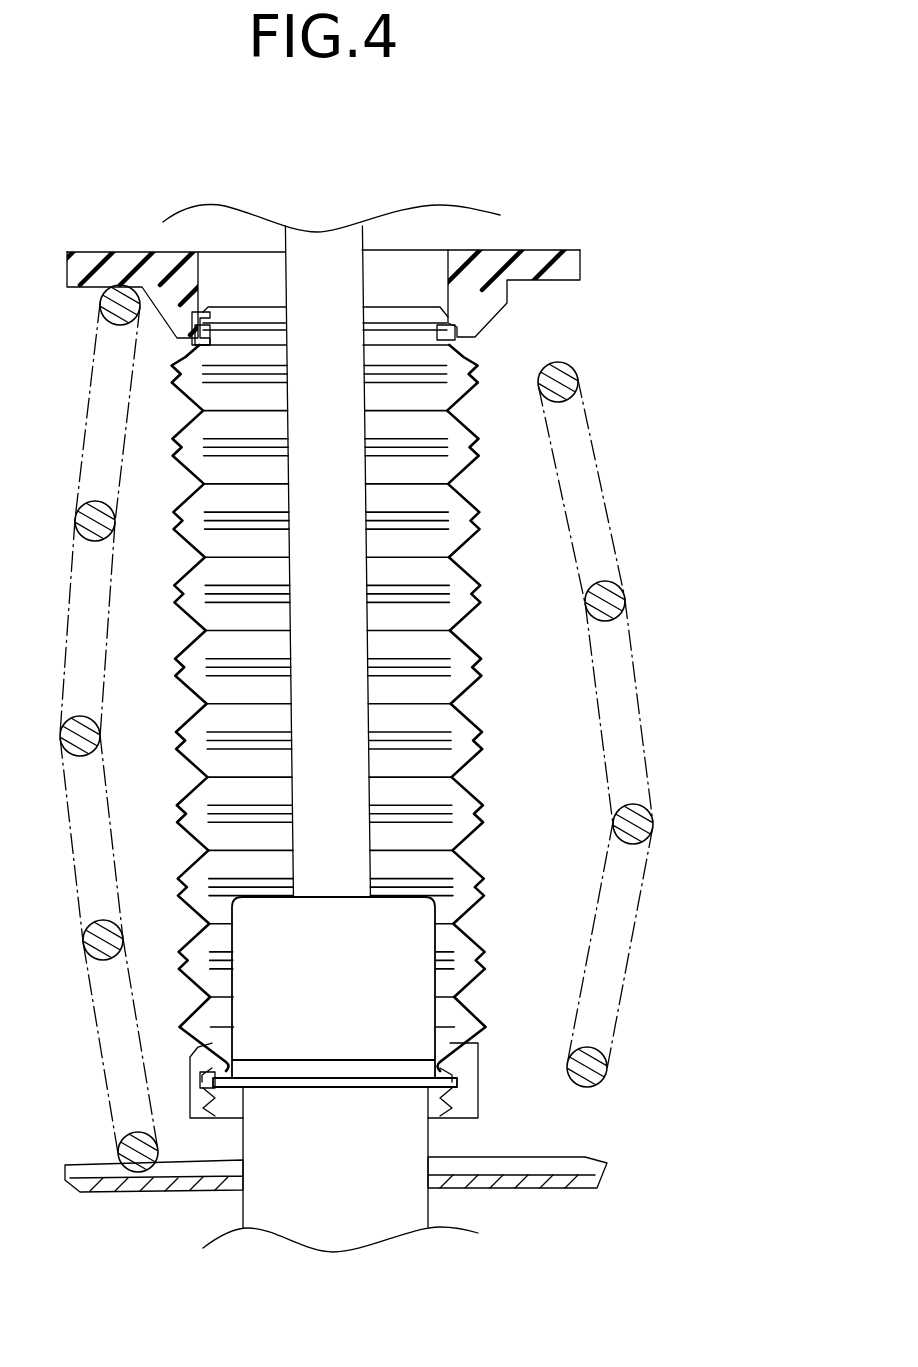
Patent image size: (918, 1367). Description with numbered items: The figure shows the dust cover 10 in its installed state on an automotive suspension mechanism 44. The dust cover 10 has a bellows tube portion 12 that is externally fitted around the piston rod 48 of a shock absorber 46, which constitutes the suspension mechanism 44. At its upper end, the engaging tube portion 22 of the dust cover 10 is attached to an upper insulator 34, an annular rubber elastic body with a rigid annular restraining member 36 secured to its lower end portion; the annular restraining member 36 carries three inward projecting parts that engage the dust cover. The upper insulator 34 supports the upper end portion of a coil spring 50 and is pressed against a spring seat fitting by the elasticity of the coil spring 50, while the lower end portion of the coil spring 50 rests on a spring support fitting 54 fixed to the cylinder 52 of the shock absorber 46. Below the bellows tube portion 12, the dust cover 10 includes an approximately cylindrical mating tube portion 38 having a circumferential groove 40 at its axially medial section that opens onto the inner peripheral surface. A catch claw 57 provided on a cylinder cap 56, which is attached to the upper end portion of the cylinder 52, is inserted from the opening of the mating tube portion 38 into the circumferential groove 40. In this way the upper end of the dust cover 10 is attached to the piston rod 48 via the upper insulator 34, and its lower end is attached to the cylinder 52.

The dust cover 10 is at (505, 357).
The bellows tube portion 12 is at (492, 686).
The engaging tube portion 22 is at (205, 314).
The upper insulator 34 is at (537, 246).
The annular restraining member 36 is at (204, 337).
The mating tube portion 38 is at (483, 1098).
The circumferential groove 40 is at (208, 1073).
The suspension mechanism 44 is at (511, 1221).
The shock absorber 46 is at (233, 1140).
The piston rod 48 is at (333, 683).
The coil spring 50 is at (608, 598).
The cylinder 52 is at (287, 1217).
The spring support fitting 54 is at (132, 1192).
The cylinder cap 56 is at (385, 970).
The catch claw 57 is at (432, 1073).